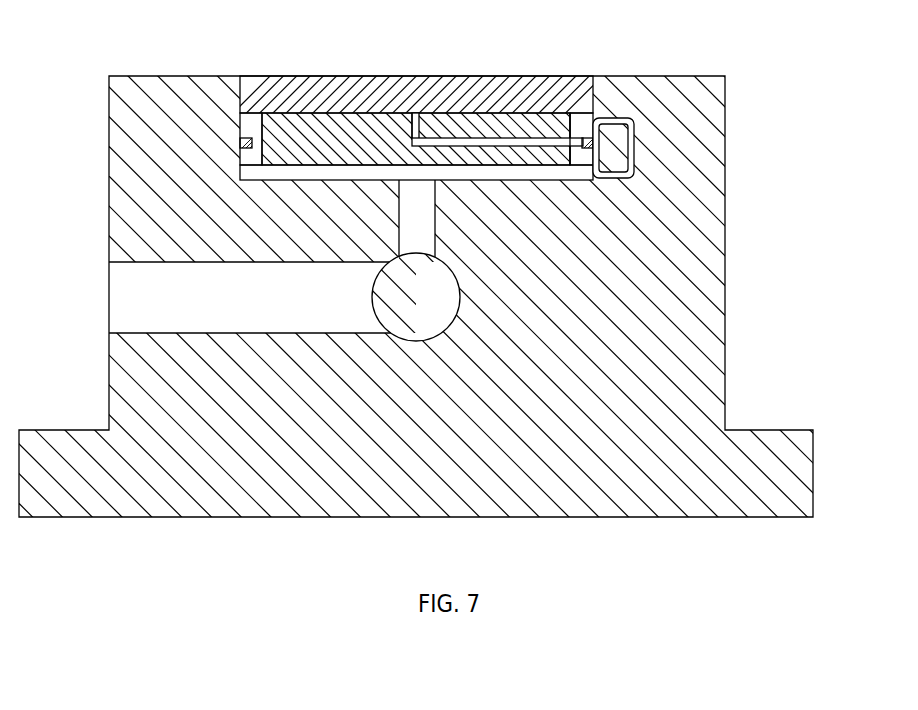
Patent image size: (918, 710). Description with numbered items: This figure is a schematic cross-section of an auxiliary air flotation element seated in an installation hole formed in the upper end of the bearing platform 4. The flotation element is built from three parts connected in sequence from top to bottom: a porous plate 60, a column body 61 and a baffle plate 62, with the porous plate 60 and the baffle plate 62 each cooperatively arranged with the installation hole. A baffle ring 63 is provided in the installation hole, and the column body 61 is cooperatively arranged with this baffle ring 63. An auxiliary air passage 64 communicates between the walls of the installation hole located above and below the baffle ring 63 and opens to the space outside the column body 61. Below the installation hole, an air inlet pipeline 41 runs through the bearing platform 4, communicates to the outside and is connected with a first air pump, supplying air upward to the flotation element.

The bearing platform 4 is at (459, 355).
The air inlet pipeline 41 is at (242, 260).
The porous plate 60 is at (402, 71).
The column body 61 is at (413, 96).
The baffle plate 62 is at (416, 95).
The baffle ring 63 is at (461, 92).
The auxiliary air passage 64 is at (694, 132).